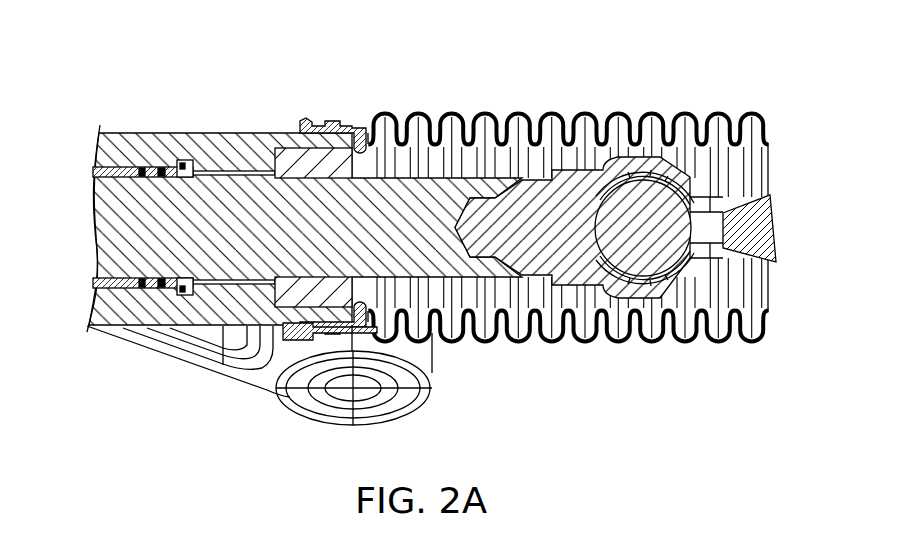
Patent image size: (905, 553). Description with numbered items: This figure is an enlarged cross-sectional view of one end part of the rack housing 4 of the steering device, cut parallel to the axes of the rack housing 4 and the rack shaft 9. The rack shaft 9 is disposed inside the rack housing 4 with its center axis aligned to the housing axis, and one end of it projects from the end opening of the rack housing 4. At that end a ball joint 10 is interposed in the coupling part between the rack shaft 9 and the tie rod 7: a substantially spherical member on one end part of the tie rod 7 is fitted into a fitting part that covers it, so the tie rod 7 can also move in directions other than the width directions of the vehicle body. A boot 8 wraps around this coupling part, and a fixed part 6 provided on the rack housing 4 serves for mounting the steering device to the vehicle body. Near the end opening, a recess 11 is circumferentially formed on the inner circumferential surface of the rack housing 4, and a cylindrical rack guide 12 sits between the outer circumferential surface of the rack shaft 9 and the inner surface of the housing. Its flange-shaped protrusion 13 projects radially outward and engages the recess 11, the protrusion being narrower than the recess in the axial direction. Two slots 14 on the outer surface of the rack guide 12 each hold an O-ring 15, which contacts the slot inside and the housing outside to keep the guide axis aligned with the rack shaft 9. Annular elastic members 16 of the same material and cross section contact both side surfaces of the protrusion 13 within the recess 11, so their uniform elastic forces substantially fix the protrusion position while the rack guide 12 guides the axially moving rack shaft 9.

The rack housing 4 is at (284, 140).
The fixed part 6 is at (410, 395).
The tie rod 7 is at (765, 220).
The boot 8 is at (542, 130).
The rack shaft 9 is at (448, 135).
The ball joint 10 is at (695, 193).
The recess 11 is at (222, 133).
The rack guide 12 is at (92, 172).
The protrusion 13 is at (185, 327).
The slot 14 is at (160, 290).
The O-ring 15 is at (141, 167).
The elastic member 16 is at (180, 160).